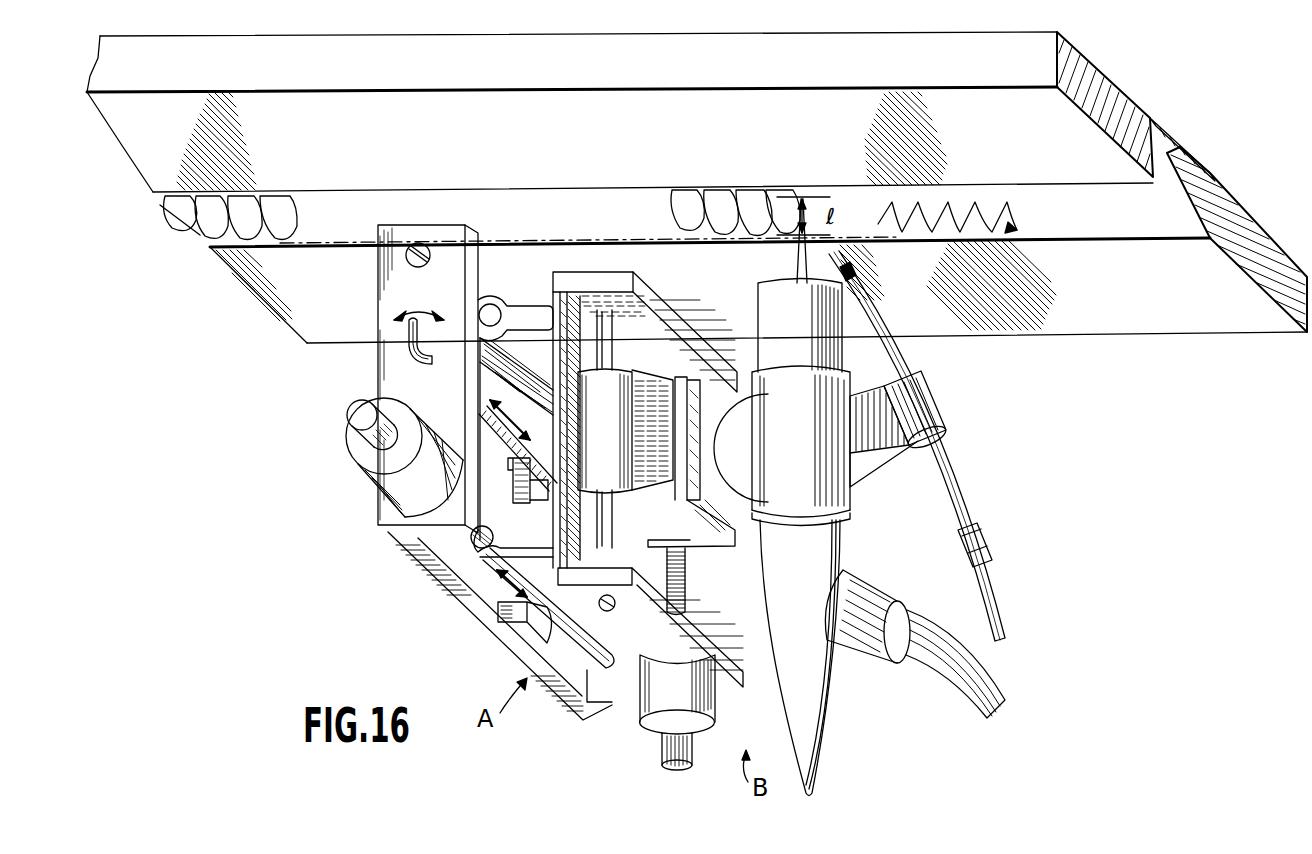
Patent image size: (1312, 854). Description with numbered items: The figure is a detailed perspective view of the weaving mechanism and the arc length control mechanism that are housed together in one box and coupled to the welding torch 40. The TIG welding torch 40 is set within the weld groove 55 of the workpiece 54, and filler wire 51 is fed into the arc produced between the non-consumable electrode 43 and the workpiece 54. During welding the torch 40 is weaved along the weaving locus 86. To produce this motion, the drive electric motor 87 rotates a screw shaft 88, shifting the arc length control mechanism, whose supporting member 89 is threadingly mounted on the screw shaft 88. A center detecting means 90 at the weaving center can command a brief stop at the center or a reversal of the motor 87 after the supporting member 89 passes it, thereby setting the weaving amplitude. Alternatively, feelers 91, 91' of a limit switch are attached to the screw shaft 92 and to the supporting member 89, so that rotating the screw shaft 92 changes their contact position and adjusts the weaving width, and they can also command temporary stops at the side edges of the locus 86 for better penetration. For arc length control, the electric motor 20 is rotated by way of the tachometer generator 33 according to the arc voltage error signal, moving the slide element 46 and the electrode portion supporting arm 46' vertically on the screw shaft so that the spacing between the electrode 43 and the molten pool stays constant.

The electric motor 20 is at (700, 708).
The tachometer generator 33 is at (692, 752).
The welding torch 40 is at (830, 534).
The non-consumable electrode 43 is at (797, 270).
The vertical slide block 46 is at (648, 479).
The electrode portion supporting arm 46' is at (702, 557).
The filler wire 51 is at (858, 268).
The workpiece 54 is at (1120, 113).
The weld groove 55 is at (1192, 153).
The weaving locus 86 is at (975, 200).
The drive electric motor 87 is at (372, 466).
The screw shaft 88 is at (478, 543).
The supporting member 89 is at (497, 568).
The center detecting means 90 is at (513, 620).
The feeler of limit switch 91 is at (518, 451).
The feeler of limit switch 91' is at (516, 499).
The screw shaft 92 is at (482, 397).